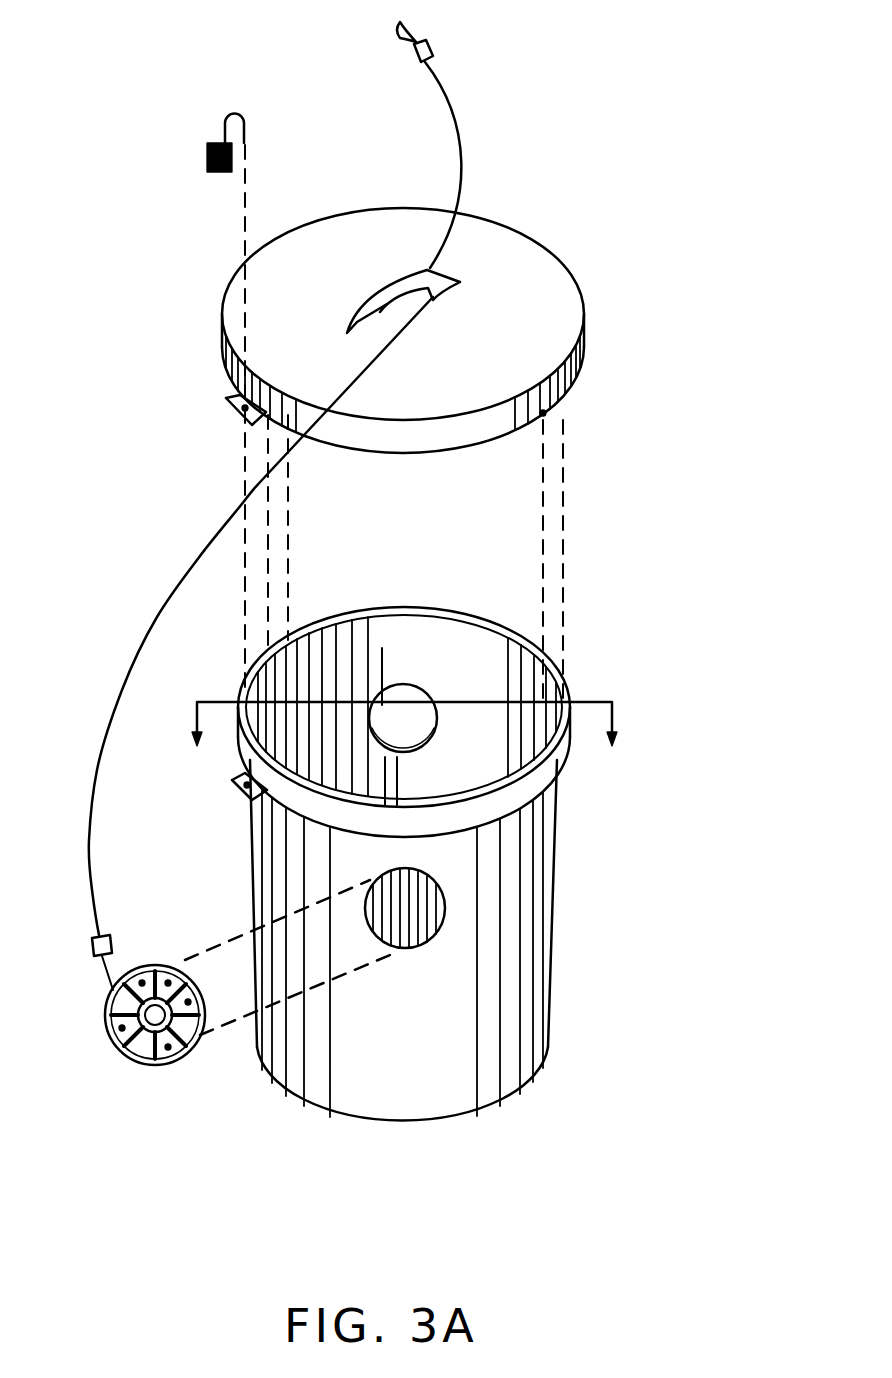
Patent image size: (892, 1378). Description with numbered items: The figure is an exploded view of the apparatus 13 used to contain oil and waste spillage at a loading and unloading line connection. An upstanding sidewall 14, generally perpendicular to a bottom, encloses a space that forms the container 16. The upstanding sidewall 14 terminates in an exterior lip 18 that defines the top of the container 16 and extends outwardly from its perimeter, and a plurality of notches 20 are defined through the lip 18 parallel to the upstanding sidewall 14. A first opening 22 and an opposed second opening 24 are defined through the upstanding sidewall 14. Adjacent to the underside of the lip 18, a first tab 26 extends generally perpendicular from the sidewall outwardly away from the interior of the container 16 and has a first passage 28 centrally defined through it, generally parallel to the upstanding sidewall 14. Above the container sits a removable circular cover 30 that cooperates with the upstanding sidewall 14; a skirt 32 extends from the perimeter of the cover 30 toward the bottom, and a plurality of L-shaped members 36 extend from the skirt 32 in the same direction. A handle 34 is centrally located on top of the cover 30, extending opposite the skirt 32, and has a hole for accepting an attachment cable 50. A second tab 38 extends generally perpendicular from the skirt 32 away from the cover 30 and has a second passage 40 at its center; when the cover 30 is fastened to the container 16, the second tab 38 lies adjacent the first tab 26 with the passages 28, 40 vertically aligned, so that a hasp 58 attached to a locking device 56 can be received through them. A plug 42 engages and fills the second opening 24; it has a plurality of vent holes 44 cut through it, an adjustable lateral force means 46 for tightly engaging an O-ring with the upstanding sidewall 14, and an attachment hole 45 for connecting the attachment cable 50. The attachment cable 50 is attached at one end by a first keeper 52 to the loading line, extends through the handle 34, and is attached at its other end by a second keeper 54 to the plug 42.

The apparatus 13 is at (645, 627).
The upstanding sidewall 14 is at (555, 930).
The container 16 is at (434, 1032).
The exterior lip 18 is at (385, 815).
The notches 20 is at (275, 650).
The first opening 22 is at (437, 727).
The second opening 24 is at (420, 878).
The first tab 26 is at (238, 795).
The first passage 28 is at (233, 782).
The removable circular cover 30 is at (494, 354).
The skirt 32 is at (420, 435).
The handle 34 is at (410, 278).
The L-shaped members 36 is at (562, 413).
The second tab 38 is at (233, 420).
The second passage 40 is at (230, 400).
The plug 42 is at (150, 1068).
The vent holes 44 is at (142, 985).
The attachment hole 45 is at (105, 990).
The adjustable lateral force means 46 is at (185, 985).
The attachment cable 50 is at (157, 617).
The first keeper 52 is at (432, 38).
The second keeper 54 is at (87, 950).
The locking device 56 is at (207, 160).
The hasp 58 is at (240, 113).